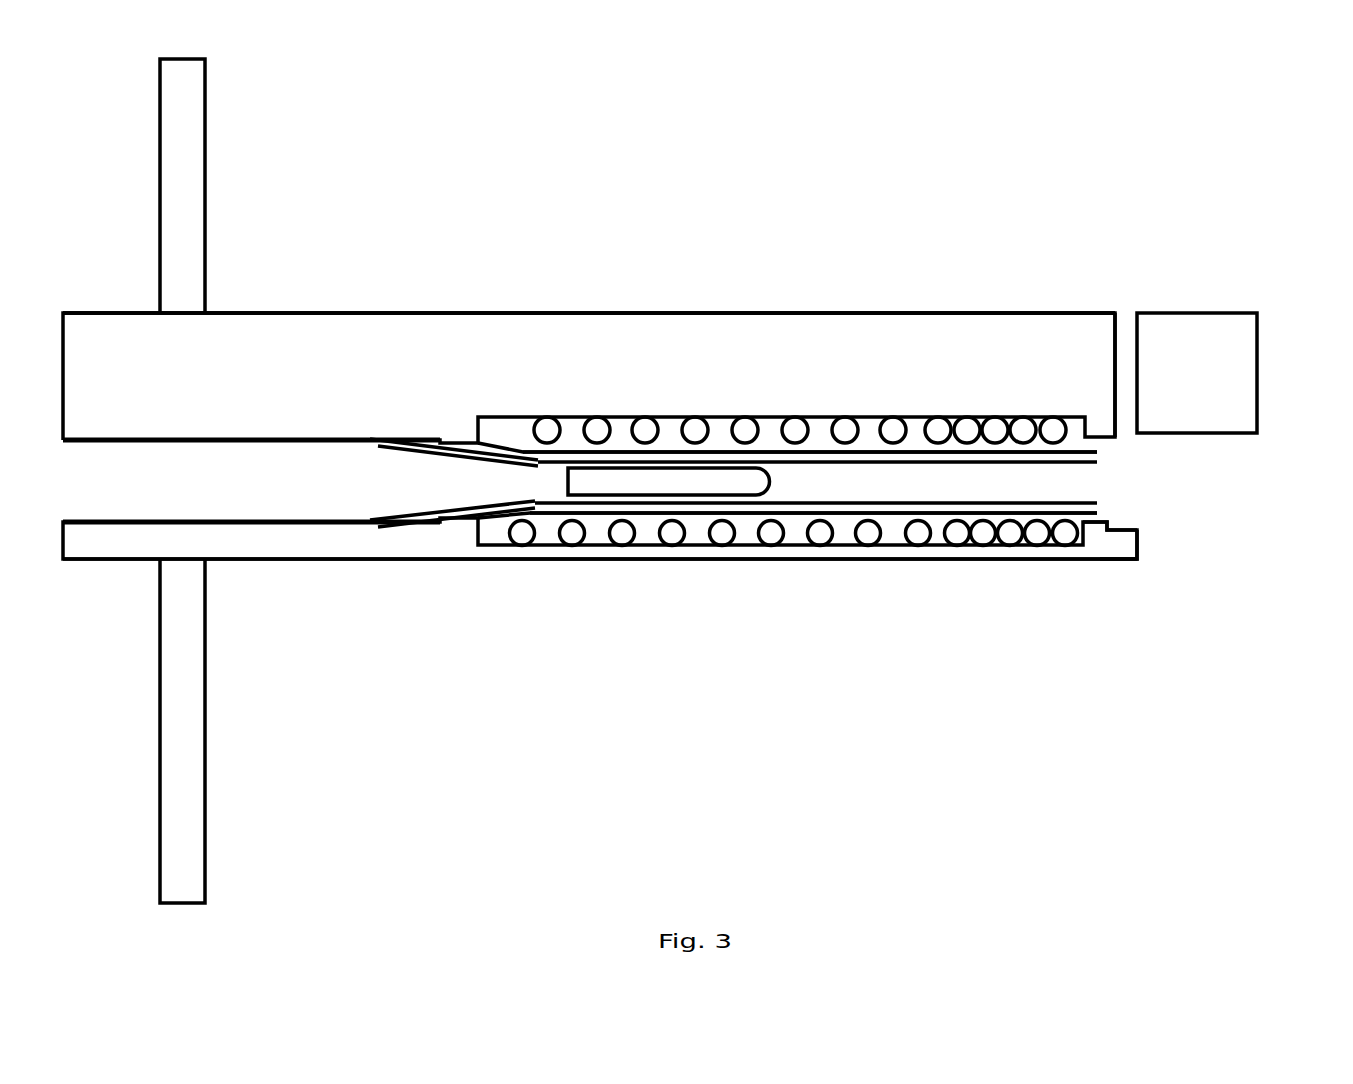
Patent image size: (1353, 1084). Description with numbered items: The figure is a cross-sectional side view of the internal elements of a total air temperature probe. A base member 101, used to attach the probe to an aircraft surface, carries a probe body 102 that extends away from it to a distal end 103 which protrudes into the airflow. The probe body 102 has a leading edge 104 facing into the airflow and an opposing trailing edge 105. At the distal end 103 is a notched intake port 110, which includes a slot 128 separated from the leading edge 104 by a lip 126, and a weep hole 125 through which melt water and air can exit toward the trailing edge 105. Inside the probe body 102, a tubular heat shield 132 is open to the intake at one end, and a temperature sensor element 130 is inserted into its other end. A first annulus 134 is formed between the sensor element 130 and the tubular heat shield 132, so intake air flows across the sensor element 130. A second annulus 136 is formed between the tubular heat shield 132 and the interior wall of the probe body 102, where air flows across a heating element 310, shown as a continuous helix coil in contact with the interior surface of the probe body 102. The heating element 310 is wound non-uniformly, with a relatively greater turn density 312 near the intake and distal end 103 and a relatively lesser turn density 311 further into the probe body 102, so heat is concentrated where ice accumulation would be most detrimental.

The base member 101 is at (207, 122).
The probe body 102 is at (456, 312).
The distal end 103 is at (1210, 292).
The leading edge 104 is at (780, 559).
The trailing edge 105 is at (840, 312).
The notched intake port 110 is at (1267, 487).
The weep hole 125 is at (1126, 322).
The lip 126 is at (1130, 559).
The slot 128 is at (1140, 522).
The temperature sensor element 130 is at (703, 492).
The tubular heat shield 132 is at (887, 457).
The first annulus 134 is at (1034, 479).
The second annulus 136 is at (1074, 446).
The heating element 310 is at (528, 430).
The lesser turn density region 311 is at (530, 405).
The greater turn density region 312 is at (923, 405).